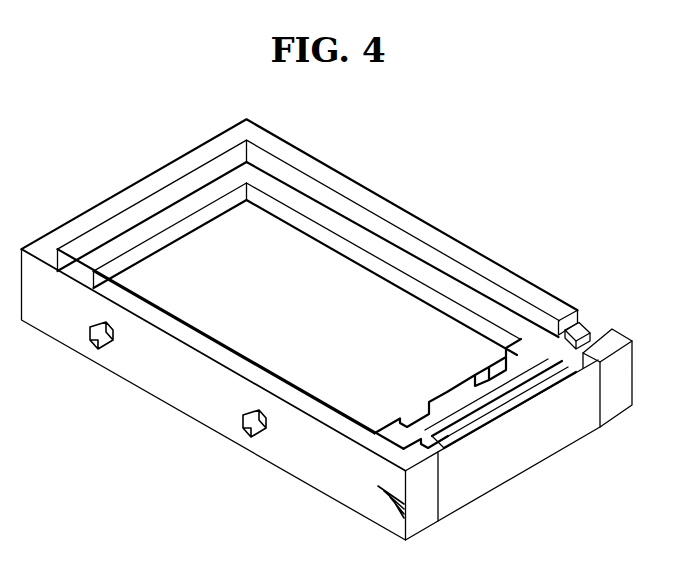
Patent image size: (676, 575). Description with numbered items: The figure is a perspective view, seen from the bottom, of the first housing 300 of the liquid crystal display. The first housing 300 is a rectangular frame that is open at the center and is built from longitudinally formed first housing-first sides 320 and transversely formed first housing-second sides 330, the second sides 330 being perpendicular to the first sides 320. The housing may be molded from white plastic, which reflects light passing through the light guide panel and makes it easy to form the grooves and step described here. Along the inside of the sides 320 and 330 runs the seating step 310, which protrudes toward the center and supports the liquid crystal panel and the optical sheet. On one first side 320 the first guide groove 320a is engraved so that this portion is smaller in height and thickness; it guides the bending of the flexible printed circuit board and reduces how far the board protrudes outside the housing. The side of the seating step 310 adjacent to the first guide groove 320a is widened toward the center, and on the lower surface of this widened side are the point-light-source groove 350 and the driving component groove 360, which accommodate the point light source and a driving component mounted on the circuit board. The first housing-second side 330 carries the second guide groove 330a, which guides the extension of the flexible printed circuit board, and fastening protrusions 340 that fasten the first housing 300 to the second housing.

The first housing 300 is at (147, 162).
The seating step 310 is at (388, 257).
The first housing-first side 320 is at (420, 512).
The first guide groove 320a is at (467, 473).
The first housing-second side 330 is at (548, 303).
The second guide groove 330a is at (583, 350).
The fastening protrusion 340 is at (93, 357).
The point-light-source groove 350 is at (493, 368).
The driving component groove 360 is at (518, 400).